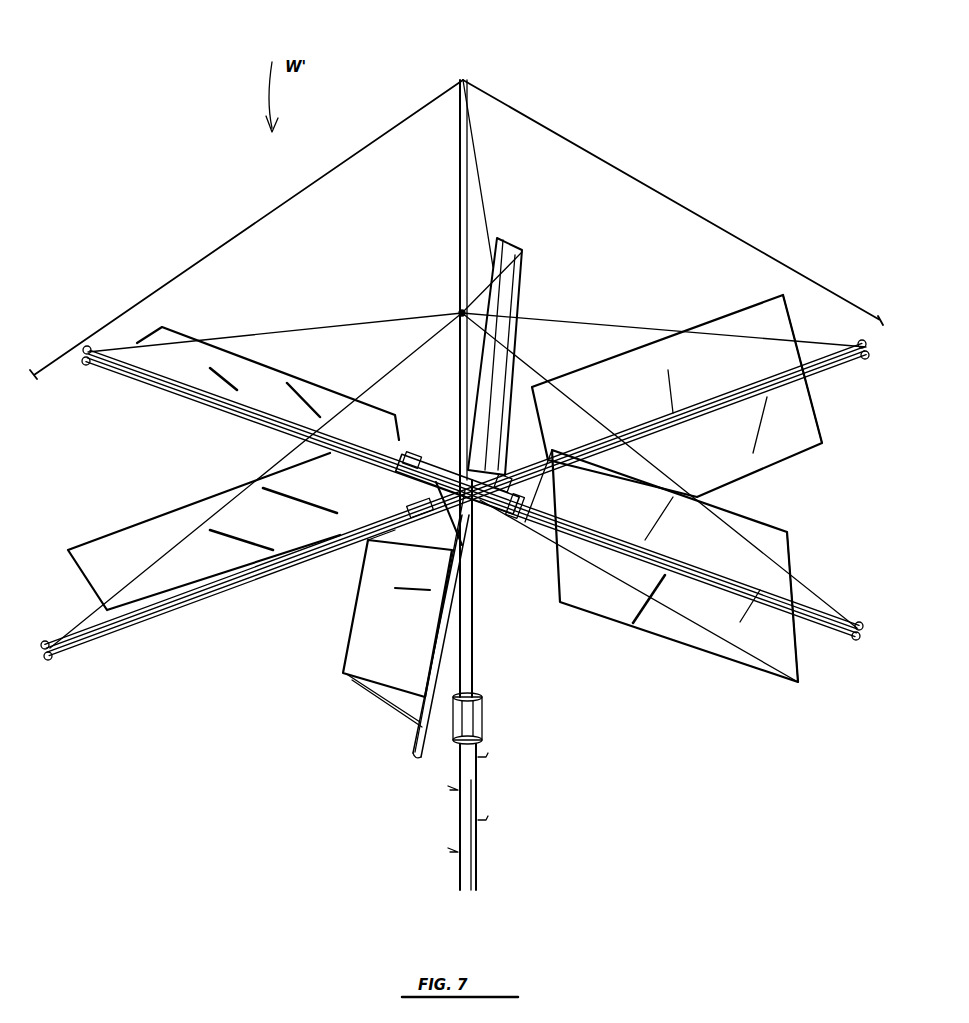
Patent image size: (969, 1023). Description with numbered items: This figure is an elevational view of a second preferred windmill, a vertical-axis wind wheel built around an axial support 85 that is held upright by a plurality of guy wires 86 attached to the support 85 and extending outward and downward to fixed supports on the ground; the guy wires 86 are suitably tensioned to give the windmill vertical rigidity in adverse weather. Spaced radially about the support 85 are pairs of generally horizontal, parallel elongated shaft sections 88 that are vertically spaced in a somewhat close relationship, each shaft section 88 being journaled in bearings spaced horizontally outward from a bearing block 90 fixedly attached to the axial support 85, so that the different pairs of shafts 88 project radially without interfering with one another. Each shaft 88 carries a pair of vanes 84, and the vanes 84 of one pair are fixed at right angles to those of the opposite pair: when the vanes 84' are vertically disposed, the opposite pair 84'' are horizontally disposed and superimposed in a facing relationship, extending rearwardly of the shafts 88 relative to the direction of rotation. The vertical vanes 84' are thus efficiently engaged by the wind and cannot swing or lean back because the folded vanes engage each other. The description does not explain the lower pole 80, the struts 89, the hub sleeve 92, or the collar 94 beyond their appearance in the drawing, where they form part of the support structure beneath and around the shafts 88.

The pole 80 is at (480, 806).
The vanes 84 is at (454, 510).
The vertical vanes 84' is at (275, 563).
The opposite pair of vanes 84'' is at (605, 400).
The support 85 is at (466, 78).
The guy wires 86 is at (300, 190).
The shaft sections 88 is at (207, 398).
The strut 89 is at (333, 322).
The bearing block 90 is at (460, 310).
The hub sleeve 92 is at (398, 470).
The collar 94 is at (484, 722).